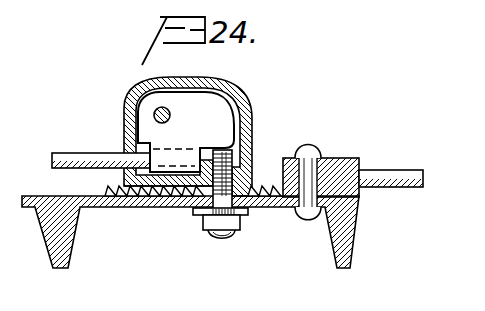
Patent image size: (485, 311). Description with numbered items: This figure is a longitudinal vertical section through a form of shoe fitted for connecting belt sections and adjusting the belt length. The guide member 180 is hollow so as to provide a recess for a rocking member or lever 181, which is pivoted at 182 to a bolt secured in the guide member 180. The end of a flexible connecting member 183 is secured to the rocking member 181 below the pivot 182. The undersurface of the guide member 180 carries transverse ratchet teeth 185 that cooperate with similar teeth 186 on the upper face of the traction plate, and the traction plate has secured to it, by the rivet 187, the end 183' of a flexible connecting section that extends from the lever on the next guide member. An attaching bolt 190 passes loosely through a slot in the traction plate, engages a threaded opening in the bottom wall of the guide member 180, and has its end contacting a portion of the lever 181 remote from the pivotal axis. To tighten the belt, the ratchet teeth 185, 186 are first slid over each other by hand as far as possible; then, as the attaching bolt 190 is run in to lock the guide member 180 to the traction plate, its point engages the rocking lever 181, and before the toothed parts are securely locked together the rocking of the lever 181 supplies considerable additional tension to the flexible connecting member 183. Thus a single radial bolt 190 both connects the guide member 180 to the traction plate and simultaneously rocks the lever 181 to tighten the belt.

The guide member 180 is at (244, 102).
The rocking member or lever 181 is at (200, 108).
The pivot 182 is at (154, 112).
The flexible connecting member 183 is at (100, 146).
The end of flexible connecting section 183' is at (392, 163).
The transverse ratchet teeth 185 is at (127, 183).
The teeth 186 is at (108, 190).
The rivet 187 is at (312, 157).
The attaching bolt 190 is at (221, 207).